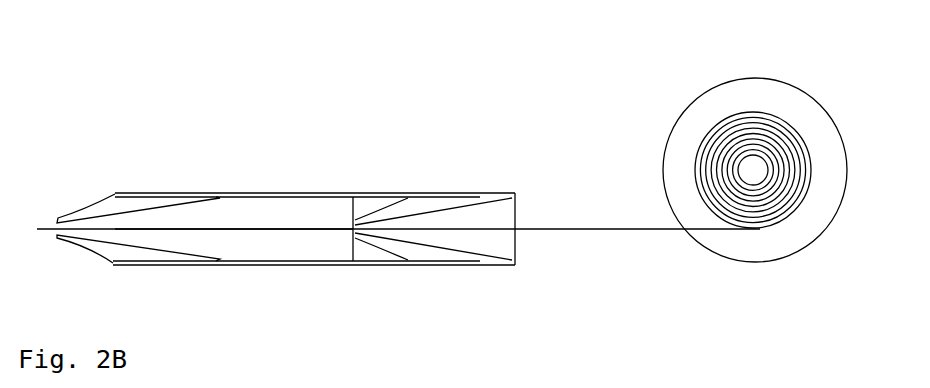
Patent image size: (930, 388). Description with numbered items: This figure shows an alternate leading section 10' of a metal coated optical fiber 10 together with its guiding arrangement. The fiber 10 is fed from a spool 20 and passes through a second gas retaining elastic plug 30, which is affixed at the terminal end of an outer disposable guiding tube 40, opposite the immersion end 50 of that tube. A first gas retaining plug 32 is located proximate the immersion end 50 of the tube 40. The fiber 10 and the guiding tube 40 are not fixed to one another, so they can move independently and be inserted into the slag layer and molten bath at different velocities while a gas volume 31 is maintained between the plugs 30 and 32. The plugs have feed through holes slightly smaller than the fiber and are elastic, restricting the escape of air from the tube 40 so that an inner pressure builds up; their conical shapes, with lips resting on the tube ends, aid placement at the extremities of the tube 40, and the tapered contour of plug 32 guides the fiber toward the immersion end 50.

The metal coated optical fiber 10 is at (398, 174).
The leading section of the metal coated optical fiber 10' is at (234, 171).
The spool 20 is at (727, 105).
The second gas retaining elastic plug 30 is at (493, 262).
The gas volume 31 is at (317, 224).
The first gas retaining plug 32 is at (83, 245).
The outer disposable guiding tube 40 is at (267, 193).
The immersion end 50 is at (115, 194).